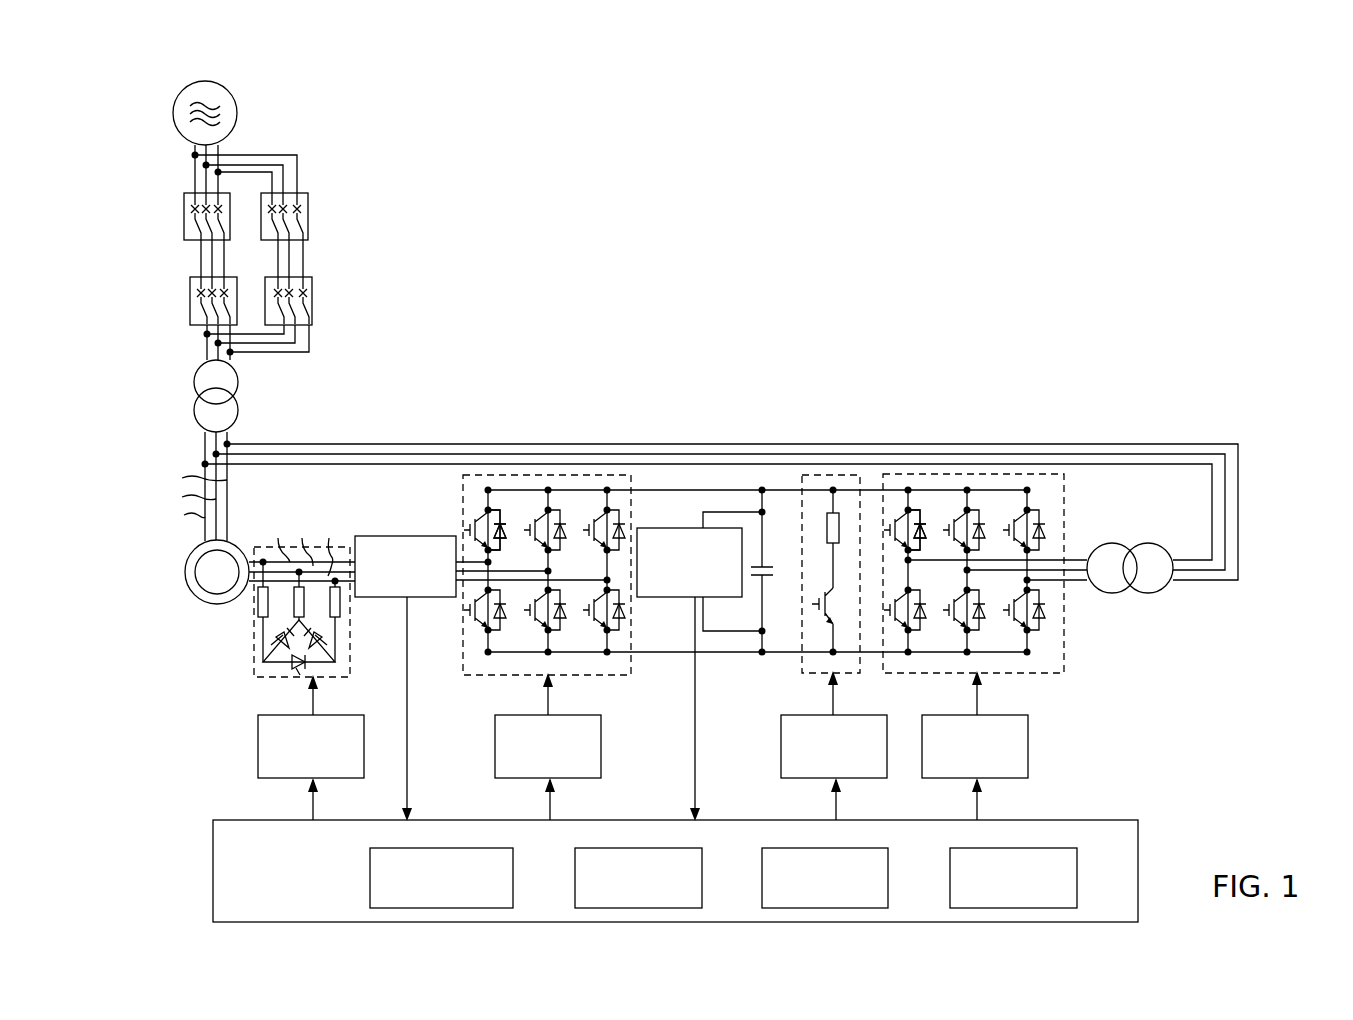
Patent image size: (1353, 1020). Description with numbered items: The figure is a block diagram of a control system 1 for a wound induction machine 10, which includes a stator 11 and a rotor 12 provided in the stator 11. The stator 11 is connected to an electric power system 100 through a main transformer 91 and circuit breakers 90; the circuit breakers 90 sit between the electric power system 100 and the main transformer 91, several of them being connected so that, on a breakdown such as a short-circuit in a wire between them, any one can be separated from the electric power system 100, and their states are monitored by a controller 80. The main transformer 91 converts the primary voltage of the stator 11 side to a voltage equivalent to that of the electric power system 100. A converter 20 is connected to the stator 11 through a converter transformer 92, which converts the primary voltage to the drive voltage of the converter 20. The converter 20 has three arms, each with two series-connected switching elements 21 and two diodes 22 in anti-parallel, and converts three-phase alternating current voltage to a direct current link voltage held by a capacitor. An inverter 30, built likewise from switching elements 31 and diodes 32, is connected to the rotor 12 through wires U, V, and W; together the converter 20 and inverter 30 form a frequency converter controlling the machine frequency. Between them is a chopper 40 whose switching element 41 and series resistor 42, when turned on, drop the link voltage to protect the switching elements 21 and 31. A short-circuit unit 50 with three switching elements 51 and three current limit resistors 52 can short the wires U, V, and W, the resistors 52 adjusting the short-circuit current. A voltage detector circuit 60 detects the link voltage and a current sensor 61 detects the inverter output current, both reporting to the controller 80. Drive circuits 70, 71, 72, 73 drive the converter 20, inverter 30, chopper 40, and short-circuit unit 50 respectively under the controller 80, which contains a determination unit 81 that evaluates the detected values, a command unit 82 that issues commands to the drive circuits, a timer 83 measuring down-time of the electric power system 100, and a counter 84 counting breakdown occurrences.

The control system 1 is at (741, 282).
The electric power system 100 is at (238, 113).
The circuit breakers 90 is at (184, 215).
The main transformer 91 is at (238, 382).
The wound induction machine 10 is at (178, 600).
The stator 11 is at (200, 585).
The rotor 12 is at (206, 604).
The short-circuit unit 50 is at (274, 627).
The switching elements 51 is at (282, 638).
The resistors 52 is at (258, 600).
The current sensor 61 is at (383, 600).
The inverter 30 is at (717, 598).
The switching elements 31 is at (470, 534).
The diodes 32 is at (496, 527).
The voltage detector circuit 60 is at (660, 600).
The chopper 40 is at (805, 582).
The switching element 41 is at (819, 604).
The resistor 42 is at (827, 529).
The converter 20 is at (992, 540).
The switching elements 21 is at (897, 516).
The diodes 22 is at (920, 526).
The converter transformer 92 is at (1150, 548).
The drive circuit 70 is at (1028, 747).
The drive circuit 71 is at (495, 749).
The drive circuit 72 is at (781, 749).
The drive circuit 73 is at (258, 749).
The controller 80 is at (646, 871).
The determination unit 81 is at (513, 876).
The command unit 82 is at (702, 876).
The timer 83 is at (888, 876).
The counter 84 is at (1077, 876).